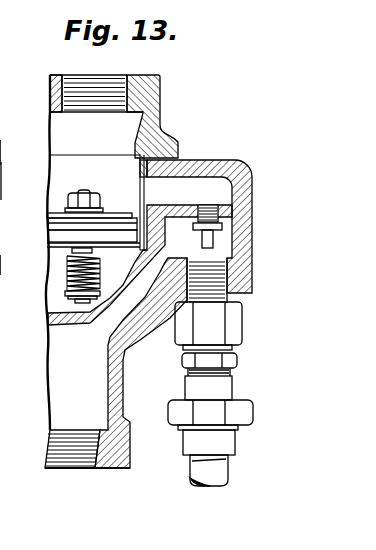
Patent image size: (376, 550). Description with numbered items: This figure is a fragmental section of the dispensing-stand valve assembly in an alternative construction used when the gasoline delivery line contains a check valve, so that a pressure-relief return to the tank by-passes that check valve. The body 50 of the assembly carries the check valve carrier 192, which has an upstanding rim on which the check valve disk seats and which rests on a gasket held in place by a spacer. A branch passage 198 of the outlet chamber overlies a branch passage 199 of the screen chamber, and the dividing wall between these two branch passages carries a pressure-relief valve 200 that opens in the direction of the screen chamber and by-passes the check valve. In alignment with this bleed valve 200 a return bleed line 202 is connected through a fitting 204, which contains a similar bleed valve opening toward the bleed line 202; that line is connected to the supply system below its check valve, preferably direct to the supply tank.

The pipe body 50 is at (63, 400).
The check valve carrier 192 is at (103, 225).
The branch passage 198 is at (20, 153).
The branch passage 199 is at (0, 263).
The pressure-relief valve 200 is at (215, 238).
The return bleed line 202 is at (195, 468).
The fitting 204 is at (228, 330).